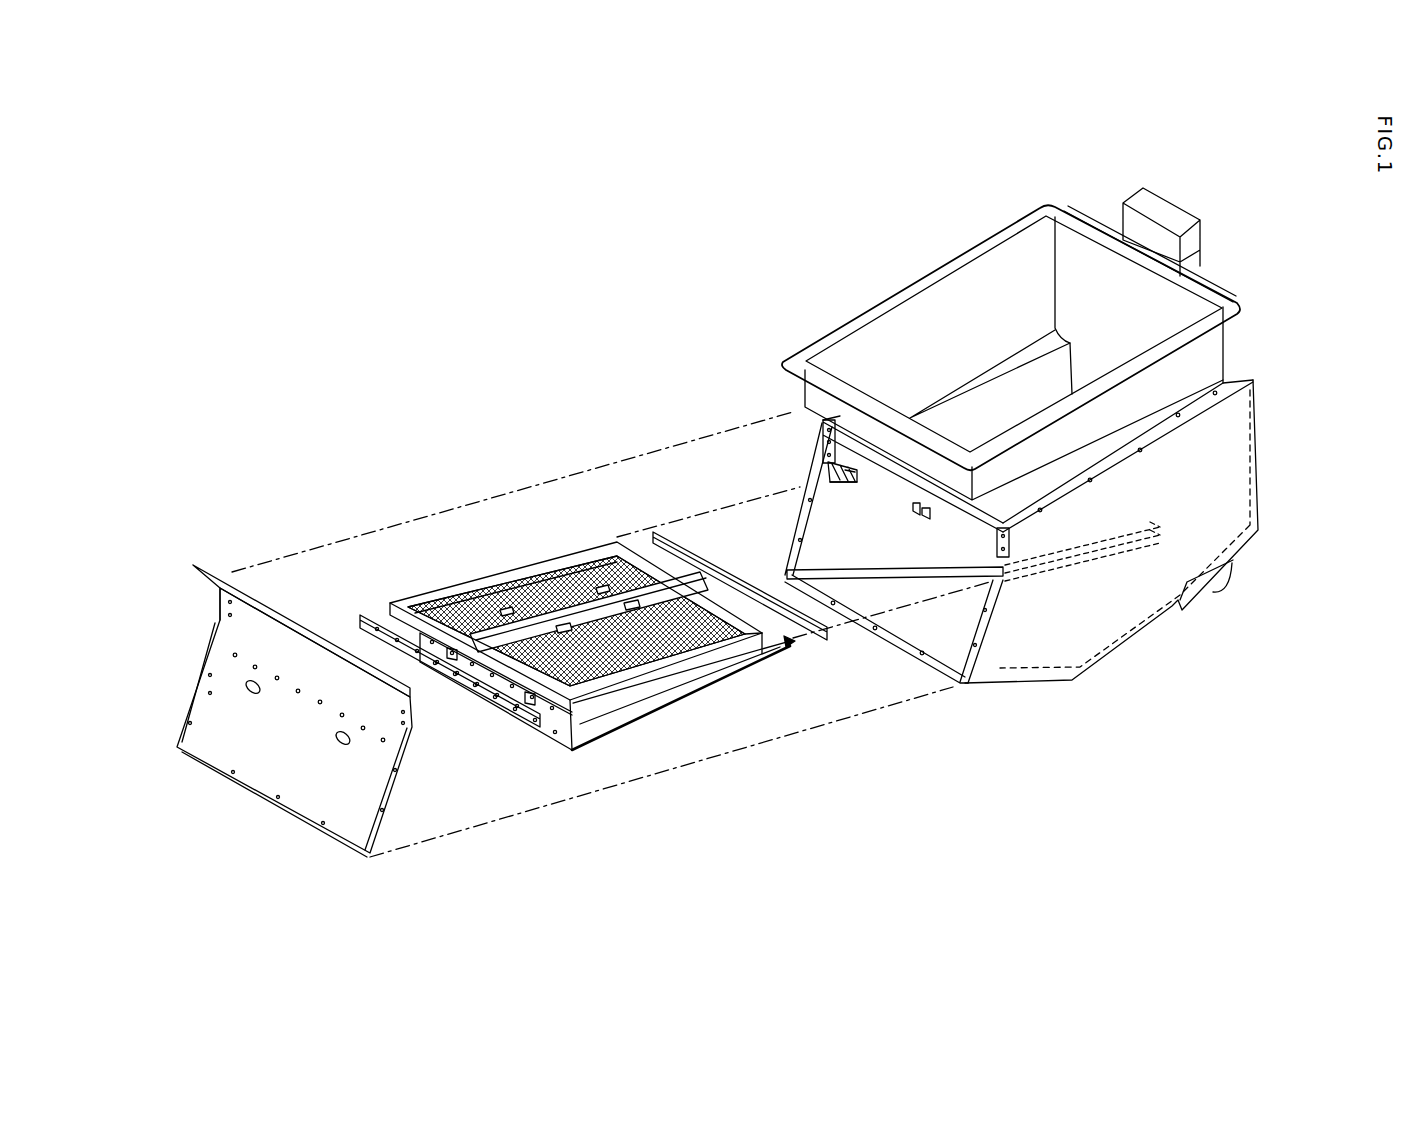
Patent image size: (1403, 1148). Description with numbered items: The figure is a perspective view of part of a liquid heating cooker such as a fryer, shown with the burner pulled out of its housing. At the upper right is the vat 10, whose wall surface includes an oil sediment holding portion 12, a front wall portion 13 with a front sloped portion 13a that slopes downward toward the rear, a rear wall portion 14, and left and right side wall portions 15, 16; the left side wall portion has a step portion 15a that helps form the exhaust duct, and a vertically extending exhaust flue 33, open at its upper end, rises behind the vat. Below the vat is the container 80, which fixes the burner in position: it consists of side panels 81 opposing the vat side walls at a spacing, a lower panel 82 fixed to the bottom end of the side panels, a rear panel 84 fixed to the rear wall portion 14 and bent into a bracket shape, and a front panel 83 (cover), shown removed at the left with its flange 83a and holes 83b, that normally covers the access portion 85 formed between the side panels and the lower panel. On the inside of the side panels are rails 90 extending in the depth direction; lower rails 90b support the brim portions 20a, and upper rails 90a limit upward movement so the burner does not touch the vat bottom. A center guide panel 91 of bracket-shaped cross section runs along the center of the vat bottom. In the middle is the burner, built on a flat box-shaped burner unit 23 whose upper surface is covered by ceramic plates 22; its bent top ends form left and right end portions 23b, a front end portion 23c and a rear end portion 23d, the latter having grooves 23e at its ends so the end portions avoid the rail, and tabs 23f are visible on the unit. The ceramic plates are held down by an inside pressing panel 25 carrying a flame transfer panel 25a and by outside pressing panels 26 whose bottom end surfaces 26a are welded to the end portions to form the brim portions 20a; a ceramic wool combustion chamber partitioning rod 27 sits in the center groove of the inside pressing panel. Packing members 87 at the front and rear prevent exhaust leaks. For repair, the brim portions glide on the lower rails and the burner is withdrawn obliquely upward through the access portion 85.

The vat 10 is at (998, 262).
The oil sediment holding portion 12 is at (1213, 590).
The front wall portion 13 is at (863, 460).
The front sloped portion 13a is at (837, 428).
The rear wall portion 14 is at (1100, 247).
The left side wall portion 15 is at (908, 326).
The step portion 15a is at (973, 387).
The right side wall portion 16 is at (1207, 355).
The brim portion 20a is at (620, 617).
The ceramic plate 22 is at (627, 545).
The burner unit 23 is at (603, 703).
The left and right end portions 23b is at (787, 640).
The front end portion 23c is at (557, 703).
The rear end portion 23d is at (790, 656).
The grooves 23e is at (797, 647).
The engagement tab 23f is at (450, 655).
The inside pressing panel 25 is at (690, 580).
The flame transfer panel 25a is at (640, 560).
The outside pressing panel 26 is at (667, 657).
The bottom end surface 26a is at (635, 678).
The combustion chamber partitioning rod 27 is at (587, 555).
The exhaust flue 33 is at (1197, 248).
The container 80 is at (1205, 503).
The side panel 81 is at (1232, 465).
The lower panel 82 is at (930, 643).
The front panel 83 is at (308, 792).
The front panel flange 83a is at (268, 600).
The front panel hole 83b is at (258, 691).
The rear panel 84 is at (1233, 363).
The access portion 85 is at (947, 612).
The packing member 87 is at (360, 615).
The rail 90 is at (843, 517).
The upper rail 90a is at (848, 492).
The lower rail 90b is at (831, 487).
The center guide panel 91 is at (923, 510).